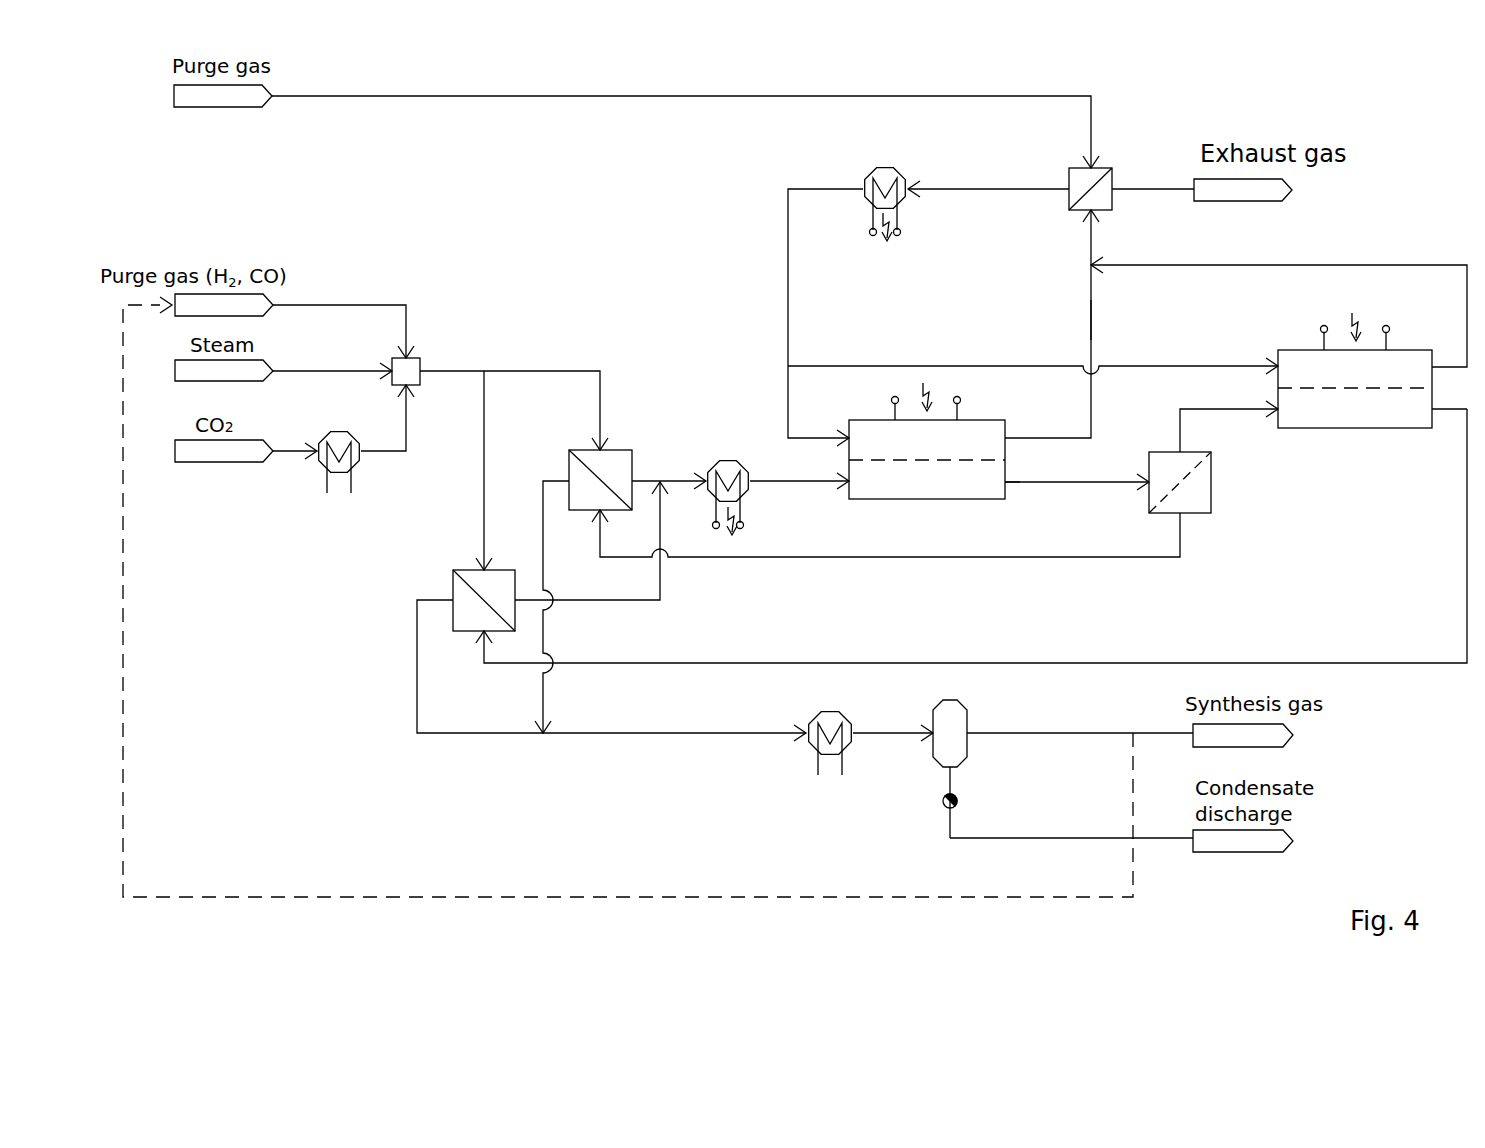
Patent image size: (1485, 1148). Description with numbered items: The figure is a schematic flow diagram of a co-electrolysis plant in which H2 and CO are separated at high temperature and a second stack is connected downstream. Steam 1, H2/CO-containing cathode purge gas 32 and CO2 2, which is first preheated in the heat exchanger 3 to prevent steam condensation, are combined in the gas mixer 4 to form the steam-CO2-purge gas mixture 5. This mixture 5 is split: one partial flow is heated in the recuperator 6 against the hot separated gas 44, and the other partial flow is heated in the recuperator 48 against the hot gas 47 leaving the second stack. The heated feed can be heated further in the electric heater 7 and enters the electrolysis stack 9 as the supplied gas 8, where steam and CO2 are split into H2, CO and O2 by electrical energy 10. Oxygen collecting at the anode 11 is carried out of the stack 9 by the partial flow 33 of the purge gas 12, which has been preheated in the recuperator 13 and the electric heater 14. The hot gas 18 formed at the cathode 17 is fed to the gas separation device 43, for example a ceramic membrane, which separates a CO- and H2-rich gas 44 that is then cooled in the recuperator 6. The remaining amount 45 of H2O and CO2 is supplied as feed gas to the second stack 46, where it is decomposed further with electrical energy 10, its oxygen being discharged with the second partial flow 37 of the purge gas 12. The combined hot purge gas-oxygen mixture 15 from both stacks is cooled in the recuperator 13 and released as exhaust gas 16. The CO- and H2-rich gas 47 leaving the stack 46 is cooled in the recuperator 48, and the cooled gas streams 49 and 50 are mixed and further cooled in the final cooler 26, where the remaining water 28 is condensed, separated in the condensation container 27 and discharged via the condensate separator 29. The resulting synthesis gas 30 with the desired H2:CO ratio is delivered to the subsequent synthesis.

The steam 1 is at (332, 360).
The CO2 2 is at (295, 442).
The heat exchanger 3 is at (366, 439).
The gas mixer 4 is at (413, 381).
The steam-CO2-purge gas mixture 5 is at (514, 458).
The recuperator 6 is at (637, 468).
The electric heater 7 is at (728, 480).
The supplied gas 8 is at (799, 491).
The electrolysis stack 9 is at (927, 464).
The electrical energy 10 is at (1056, 378).
The anode 11 is at (1224, 329).
The purge gas 12 is at (685, 117).
The recuperator 13 is at (1082, 177).
The electric heater 14 is at (967, 187).
The gas 15 is at (1077, 284).
The exhaust gas 16 is at (1153, 175).
The cathode 17 is at (1224, 446).
The hot gas 18 is at (1077, 491).
The final cooler 26 is at (871, 728).
The condensation container 27 is at (963, 733).
The water 28 is at (1071, 825).
The condensate separator 29 is at (965, 802).
The synthesis gas 30 is at (1080, 719).
The cathode purge gas 32 is at (343, 317).
The partial flow 33 is at (825, 317).
The second partial flow 37 is at (1033, 358).
The gas separation device 43 is at (1180, 482).
The gas 44 is at (886, 533).
The remaining amount 45 is at (1229, 426).
The second stack 46 is at (1355, 392).
The CO and H2-rich gas 47 is at (971, 536).
The recuperator 48 is at (560, 556).
The cooled gas stream 49 is at (552, 607).
The cooled gas stream 50 is at (611, 670).